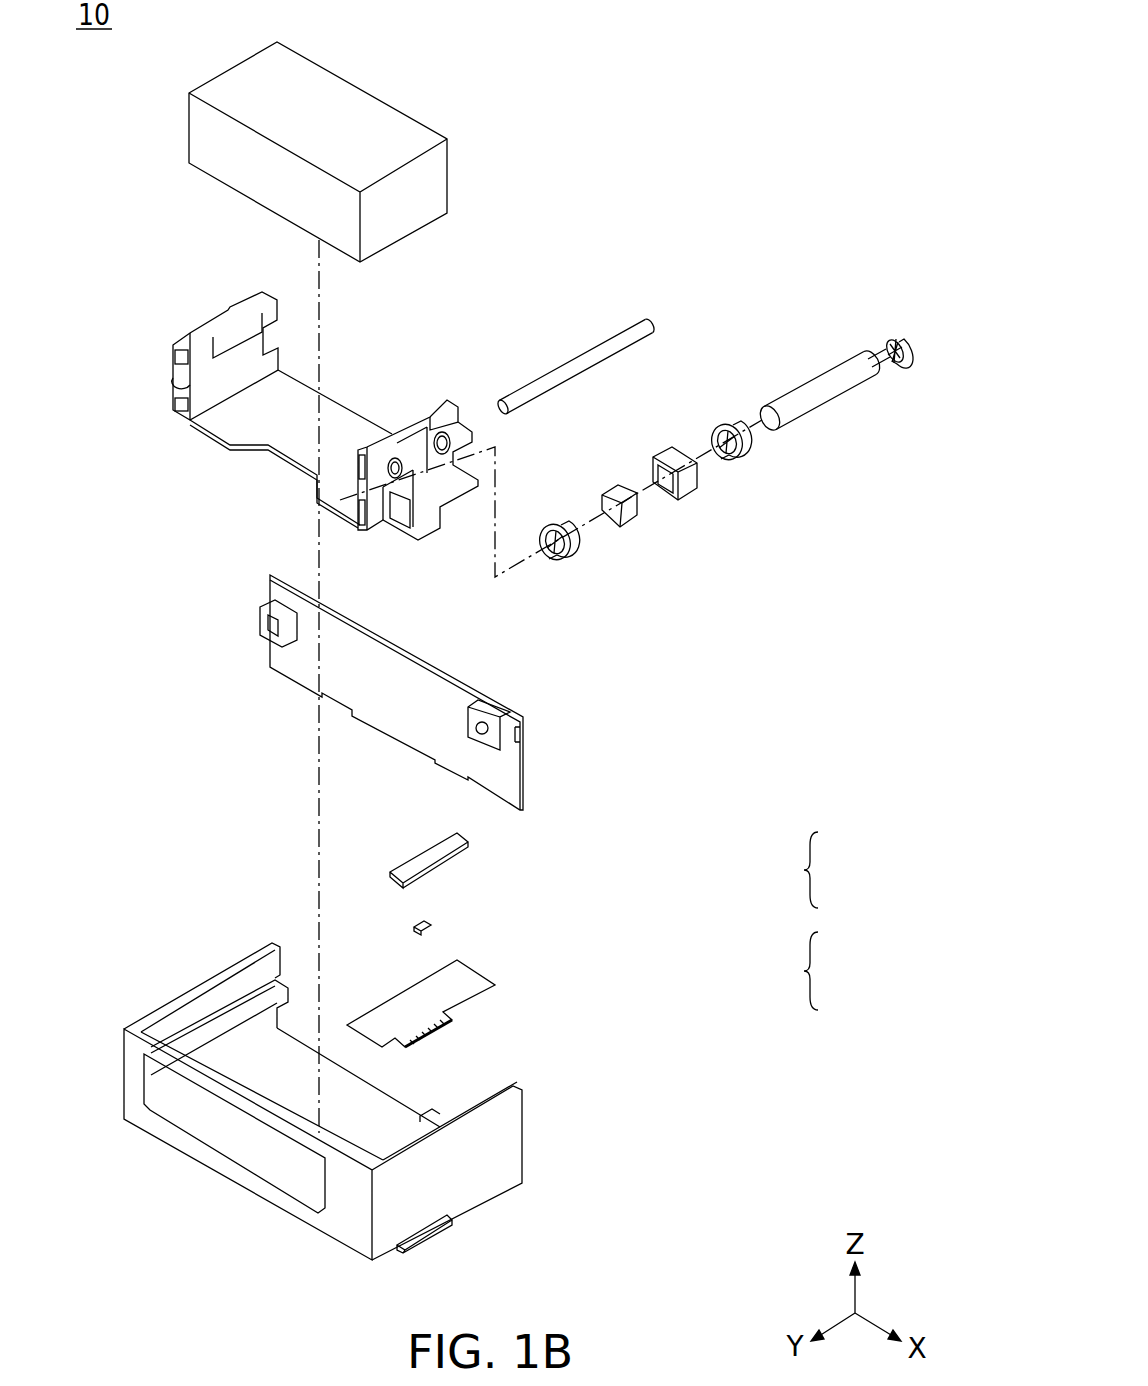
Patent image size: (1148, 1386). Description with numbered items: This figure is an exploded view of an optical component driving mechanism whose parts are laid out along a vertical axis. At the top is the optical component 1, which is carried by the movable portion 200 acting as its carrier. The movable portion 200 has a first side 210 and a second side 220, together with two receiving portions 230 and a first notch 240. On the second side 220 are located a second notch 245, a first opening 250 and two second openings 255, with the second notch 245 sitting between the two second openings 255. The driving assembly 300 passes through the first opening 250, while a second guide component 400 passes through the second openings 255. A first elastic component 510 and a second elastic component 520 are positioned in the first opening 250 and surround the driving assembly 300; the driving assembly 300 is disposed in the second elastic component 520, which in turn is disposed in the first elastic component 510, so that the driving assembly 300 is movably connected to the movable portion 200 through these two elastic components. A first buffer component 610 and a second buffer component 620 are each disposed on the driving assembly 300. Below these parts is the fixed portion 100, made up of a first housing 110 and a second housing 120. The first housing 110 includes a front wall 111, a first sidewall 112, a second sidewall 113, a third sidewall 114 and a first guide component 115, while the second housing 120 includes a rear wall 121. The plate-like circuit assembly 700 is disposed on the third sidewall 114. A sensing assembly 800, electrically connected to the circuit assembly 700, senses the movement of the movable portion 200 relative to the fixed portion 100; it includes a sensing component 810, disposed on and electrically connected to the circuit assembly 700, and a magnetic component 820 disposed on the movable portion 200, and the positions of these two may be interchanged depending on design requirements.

The optical component 1 is at (358, 105).
The fixed portion 100 is at (810, 870).
The first housing 110 is at (346, 1101).
The front wall 111 is at (340, 1227).
The first sidewall 112 is at (195, 1003).
The second sidewall 113 is at (453, 1185).
The third sidewall 114 is at (392, 1117).
The first guide component 115 is at (257, 990).
The second housing 120 is at (445, 693).
The rear wall 121 is at (415, 680).
The movable portion 200 is at (334, 409).
The first side 210 is at (253, 303).
The second side 220 is at (447, 400).
The receiving portions 230 is at (178, 383).
The first notch 240 is at (215, 326).
The second notch 245 is at (437, 437).
The first opening 250 is at (403, 513).
The second openings 255 is at (390, 465).
The driving assembly 300 is at (828, 390).
The second guide component 400 is at (627, 333).
The first elastic component 510 is at (692, 485).
The second elastic component 520 is at (632, 515).
The first buffer component 610 is at (575, 548).
The second buffer component 620 is at (748, 450).
The circuit assembly 700 is at (460, 980).
The sensing assembly 800 is at (810, 971).
The sensing component 810 is at (430, 920).
The magnetic component 820 is at (443, 850).